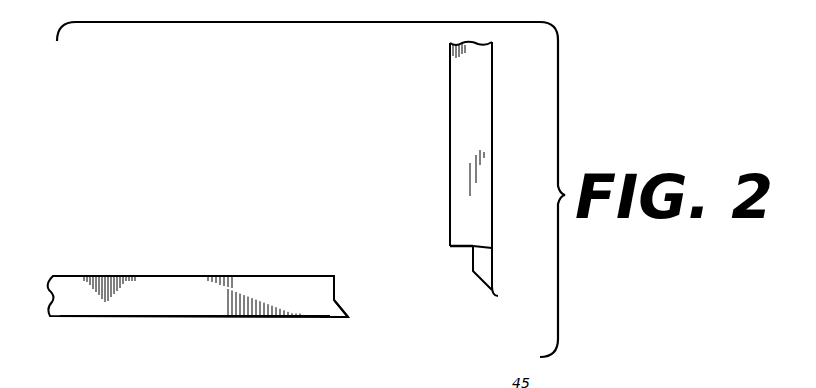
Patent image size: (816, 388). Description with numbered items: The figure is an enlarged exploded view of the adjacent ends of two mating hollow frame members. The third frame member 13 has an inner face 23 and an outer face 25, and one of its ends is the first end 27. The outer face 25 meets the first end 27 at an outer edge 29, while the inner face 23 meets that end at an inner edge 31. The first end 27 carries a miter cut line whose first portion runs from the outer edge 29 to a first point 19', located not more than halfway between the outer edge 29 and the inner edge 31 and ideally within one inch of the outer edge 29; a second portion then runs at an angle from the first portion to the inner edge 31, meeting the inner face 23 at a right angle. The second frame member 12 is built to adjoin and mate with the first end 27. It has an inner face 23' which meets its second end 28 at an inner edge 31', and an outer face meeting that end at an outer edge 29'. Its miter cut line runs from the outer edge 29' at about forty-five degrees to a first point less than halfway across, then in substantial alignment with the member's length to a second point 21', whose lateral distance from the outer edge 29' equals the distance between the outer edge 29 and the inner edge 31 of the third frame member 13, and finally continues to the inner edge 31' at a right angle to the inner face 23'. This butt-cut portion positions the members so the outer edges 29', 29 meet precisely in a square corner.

The second frame member 12 is at (492, 184).
The third frame member 13 is at (219, 302).
The inner face 23 is at (198, 283).
The outer face 25 is at (145, 317).
The inner edge 31 is at (348, 273).
The first point 19' is at (361, 291).
The outer edge 29 is at (351, 336).
The first end 27 is at (376, 308).
The inner face 23' is at (425, 150).
The inner edge 31' is at (434, 249).
The second point 21' is at (505, 251).
The outer edge 29' is at (516, 296).
The second end 28 is at (449, 288).